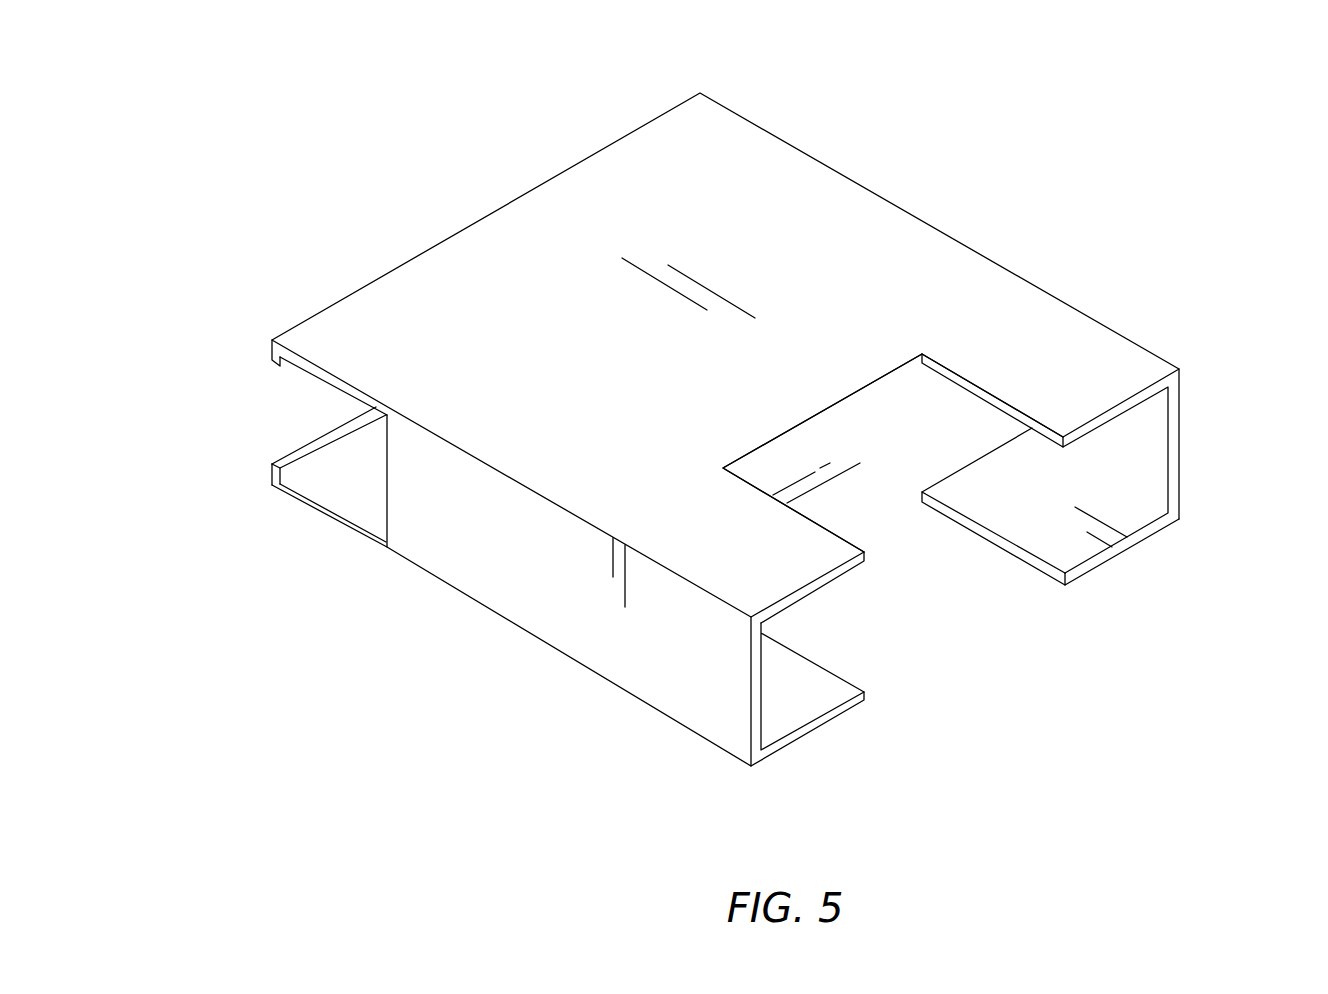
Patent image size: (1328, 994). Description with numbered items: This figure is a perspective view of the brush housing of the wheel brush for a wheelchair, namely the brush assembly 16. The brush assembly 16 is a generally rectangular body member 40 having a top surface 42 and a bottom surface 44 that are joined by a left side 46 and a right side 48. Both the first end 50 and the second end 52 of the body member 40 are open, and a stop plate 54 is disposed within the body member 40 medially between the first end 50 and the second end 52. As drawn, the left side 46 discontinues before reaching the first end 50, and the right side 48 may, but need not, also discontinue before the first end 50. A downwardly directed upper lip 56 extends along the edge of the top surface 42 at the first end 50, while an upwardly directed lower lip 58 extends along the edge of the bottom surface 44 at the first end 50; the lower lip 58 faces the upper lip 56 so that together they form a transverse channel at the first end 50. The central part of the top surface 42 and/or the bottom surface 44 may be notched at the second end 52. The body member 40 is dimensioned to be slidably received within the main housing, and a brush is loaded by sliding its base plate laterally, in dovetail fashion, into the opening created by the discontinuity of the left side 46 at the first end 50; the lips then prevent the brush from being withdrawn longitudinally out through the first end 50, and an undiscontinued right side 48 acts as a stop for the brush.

The brush assembly 16 is at (842, 221).
The body member 40 is at (738, 152).
The top surface 42 is at (660, 343).
The bottom surface 44 is at (1048, 545).
The left side 46 is at (660, 688).
The right side 48 is at (1150, 447).
The first end 50 is at (310, 505).
The second end 52 is at (1125, 557).
The stop plate 54 is at (853, 498).
The upper lip 56 is at (272, 360).
The lower lip 58 is at (275, 457).